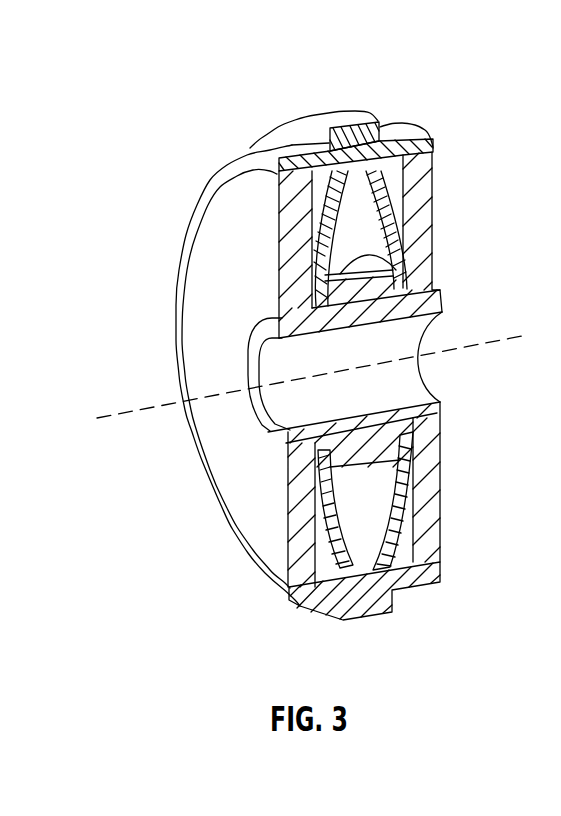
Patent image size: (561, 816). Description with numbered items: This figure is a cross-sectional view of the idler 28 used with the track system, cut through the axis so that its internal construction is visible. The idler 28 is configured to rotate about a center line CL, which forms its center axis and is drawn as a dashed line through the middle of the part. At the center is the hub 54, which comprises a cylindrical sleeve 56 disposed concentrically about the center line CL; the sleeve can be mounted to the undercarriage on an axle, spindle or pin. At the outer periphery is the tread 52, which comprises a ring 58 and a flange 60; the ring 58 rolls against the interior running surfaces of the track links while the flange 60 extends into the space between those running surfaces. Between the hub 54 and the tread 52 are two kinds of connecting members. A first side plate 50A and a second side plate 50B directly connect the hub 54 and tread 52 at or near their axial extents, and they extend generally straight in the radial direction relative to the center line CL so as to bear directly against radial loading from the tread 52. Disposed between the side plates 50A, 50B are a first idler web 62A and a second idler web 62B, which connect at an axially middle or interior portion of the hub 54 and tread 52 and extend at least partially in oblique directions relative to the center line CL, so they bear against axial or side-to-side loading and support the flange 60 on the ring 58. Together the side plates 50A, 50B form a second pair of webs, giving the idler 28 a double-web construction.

The idler 28 is at (306, 96).
The tread 52 is at (259, 135).
The hub 54 is at (450, 285).
The cylindrical sleeve 56 is at (395, 395).
The ring 58 is at (413, 145).
The flange 60 is at (362, 129).
The first idler web 62A is at (330, 211).
The second idler web 62B is at (390, 226).
The first side plate 50A is at (310, 498).
The second side plate 50B is at (432, 523).
The center line CL is at (500, 343).